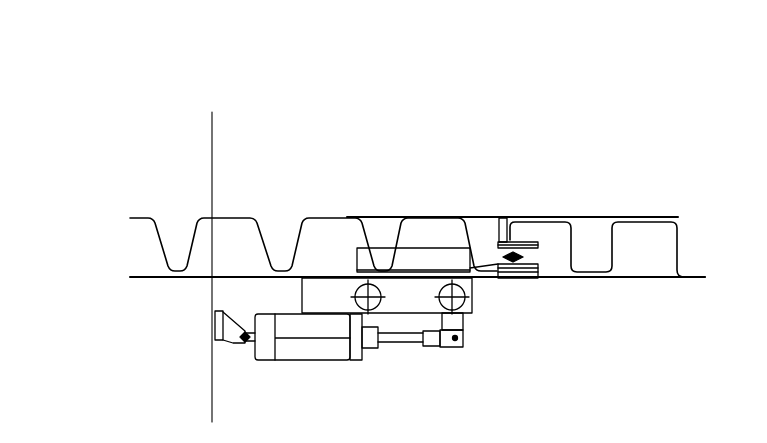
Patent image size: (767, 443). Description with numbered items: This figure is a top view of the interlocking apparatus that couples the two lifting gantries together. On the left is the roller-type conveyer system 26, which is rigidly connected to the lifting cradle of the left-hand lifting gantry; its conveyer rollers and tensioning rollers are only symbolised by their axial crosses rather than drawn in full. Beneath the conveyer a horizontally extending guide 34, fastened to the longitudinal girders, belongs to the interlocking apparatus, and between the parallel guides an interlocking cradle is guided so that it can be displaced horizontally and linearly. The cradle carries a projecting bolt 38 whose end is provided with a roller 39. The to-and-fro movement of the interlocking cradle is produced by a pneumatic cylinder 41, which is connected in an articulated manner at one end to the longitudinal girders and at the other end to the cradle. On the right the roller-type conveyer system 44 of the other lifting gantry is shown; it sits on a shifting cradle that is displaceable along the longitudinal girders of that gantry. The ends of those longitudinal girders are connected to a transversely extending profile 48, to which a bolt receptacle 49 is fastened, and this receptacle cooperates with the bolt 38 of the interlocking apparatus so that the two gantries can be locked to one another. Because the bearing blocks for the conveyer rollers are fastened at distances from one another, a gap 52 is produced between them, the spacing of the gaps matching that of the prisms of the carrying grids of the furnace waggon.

The roller-type conveyer system 26 is at (250, 110).
The guide 34 is at (333, 290).
The bolt 38 is at (423, 260).
The roller 39 is at (530, 348).
The pneumatic cylinder 41 is at (343, 413).
The roller-type conveyer system 44 is at (700, 110).
The transversely extending profile 48 is at (500, 237).
The bolt receptacle 49 is at (518, 228).
The gap 52 is at (593, 221).